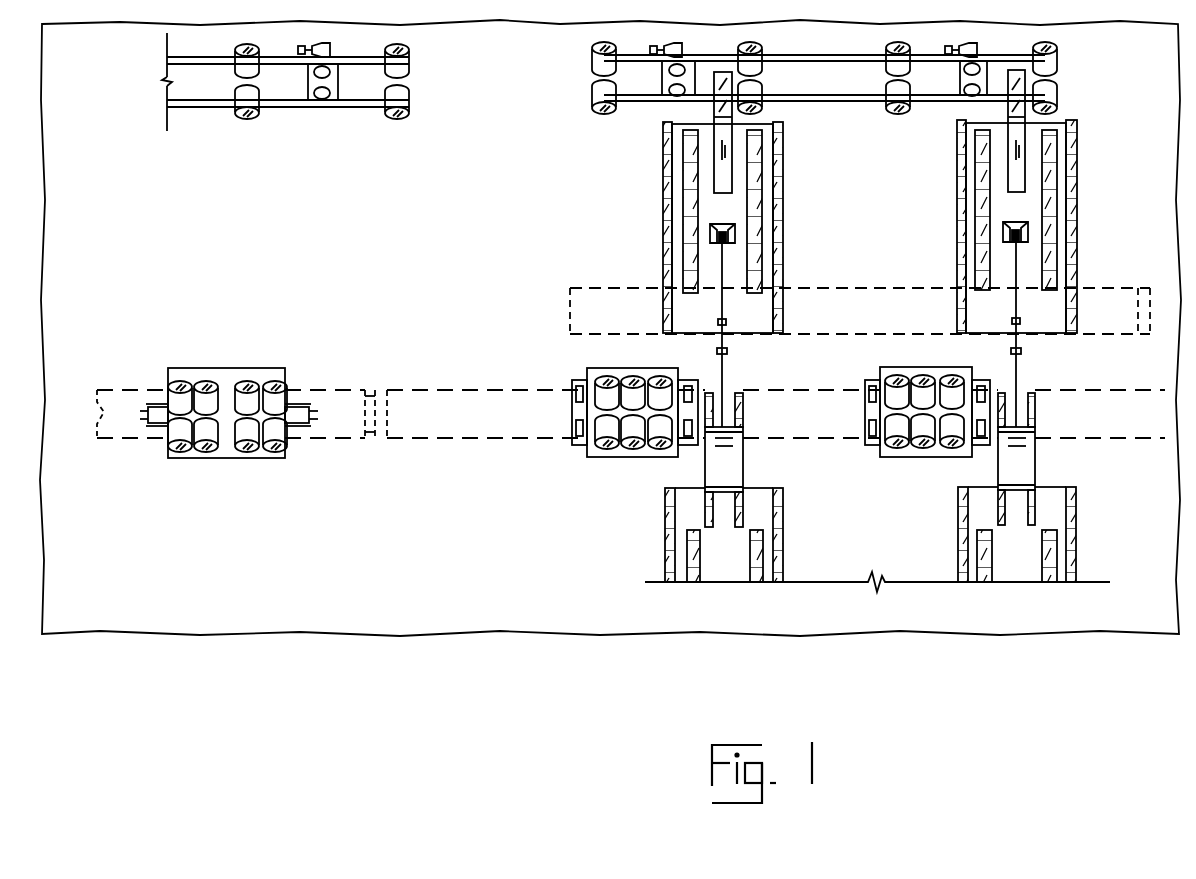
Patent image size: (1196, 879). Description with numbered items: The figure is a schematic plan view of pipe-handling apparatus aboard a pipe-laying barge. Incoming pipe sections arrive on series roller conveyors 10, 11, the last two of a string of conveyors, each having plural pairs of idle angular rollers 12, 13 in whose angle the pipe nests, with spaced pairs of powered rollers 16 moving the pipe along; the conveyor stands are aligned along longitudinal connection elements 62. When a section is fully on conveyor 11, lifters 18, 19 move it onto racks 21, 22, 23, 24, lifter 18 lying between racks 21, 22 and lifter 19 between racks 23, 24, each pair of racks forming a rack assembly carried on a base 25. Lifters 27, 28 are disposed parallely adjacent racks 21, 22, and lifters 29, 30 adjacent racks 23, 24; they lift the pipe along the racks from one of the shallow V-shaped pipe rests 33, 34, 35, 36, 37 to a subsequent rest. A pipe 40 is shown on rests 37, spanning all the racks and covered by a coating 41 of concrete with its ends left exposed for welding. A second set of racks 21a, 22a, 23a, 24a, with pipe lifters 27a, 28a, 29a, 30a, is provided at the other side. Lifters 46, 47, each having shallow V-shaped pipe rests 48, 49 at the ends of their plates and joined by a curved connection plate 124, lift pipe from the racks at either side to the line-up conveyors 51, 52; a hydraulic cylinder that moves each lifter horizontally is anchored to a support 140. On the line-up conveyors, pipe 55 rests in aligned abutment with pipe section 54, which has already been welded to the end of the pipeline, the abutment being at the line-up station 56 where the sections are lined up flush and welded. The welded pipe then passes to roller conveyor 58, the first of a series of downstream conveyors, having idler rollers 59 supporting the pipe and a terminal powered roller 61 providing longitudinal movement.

The series roller conveyor 10 is at (365, 107).
The series roller conveyor 11 is at (630, 103).
The angular roller 12 is at (251, 118).
The angular roller 13 is at (237, 74).
The powered roller 16 is at (312, 78).
The lifter 18 is at (733, 144).
The lifter 19 is at (1008, 147).
The rack 21 is at (663, 258).
The rack 22 is at (783, 236).
The rack 23 is at (957, 184).
The rack 24 is at (1077, 201).
The base 25 is at (760, 125).
The lifter 27 is at (683, 279).
The lifter 28 is at (762, 250).
The lifter 29 is at (975, 245).
The lifter 30 is at (1057, 242).
The pipe rest 33 is at (663, 155).
The pipe rest 34 is at (663, 201).
The pipe rest 35 is at (663, 238).
The pipe rest 36 is at (663, 292).
The pipe rest 37 is at (663, 312).
The pipe 40 is at (1148, 330).
The coating 41 is at (1105, 334).
The lifter 46 is at (745, 470).
The lifter 47 is at (1037, 468).
The pipe rest 48 is at (743, 402).
The pipe rest 49 is at (742, 507).
The line-up conveyor 51 is at (615, 458).
The line-up conveyor 52 is at (913, 458).
The pipe section 54 is at (338, 442).
The pipe 55 is at (463, 440).
The line-up station 56 is at (372, 460).
The roller conveyor 58 is at (227, 413).
The roller 59 is at (247, 378).
The powered roller 61 is at (146, 417).
The longitudinal connection element 62 is at (312, 414).
The curved connection plate 124 is at (720, 465).
The support 140 is at (725, 225).
The rack 21a is at (667, 536).
The rack 22a is at (783, 541).
The rack 23a is at (960, 535).
The rack 24a is at (1076, 541).
The pipe lifter 27a is at (703, 582).
The pipe lifter 28a is at (750, 576).
The pipe lifter 29a is at (992, 582).
The pipe lifter 30a is at (1042, 576).